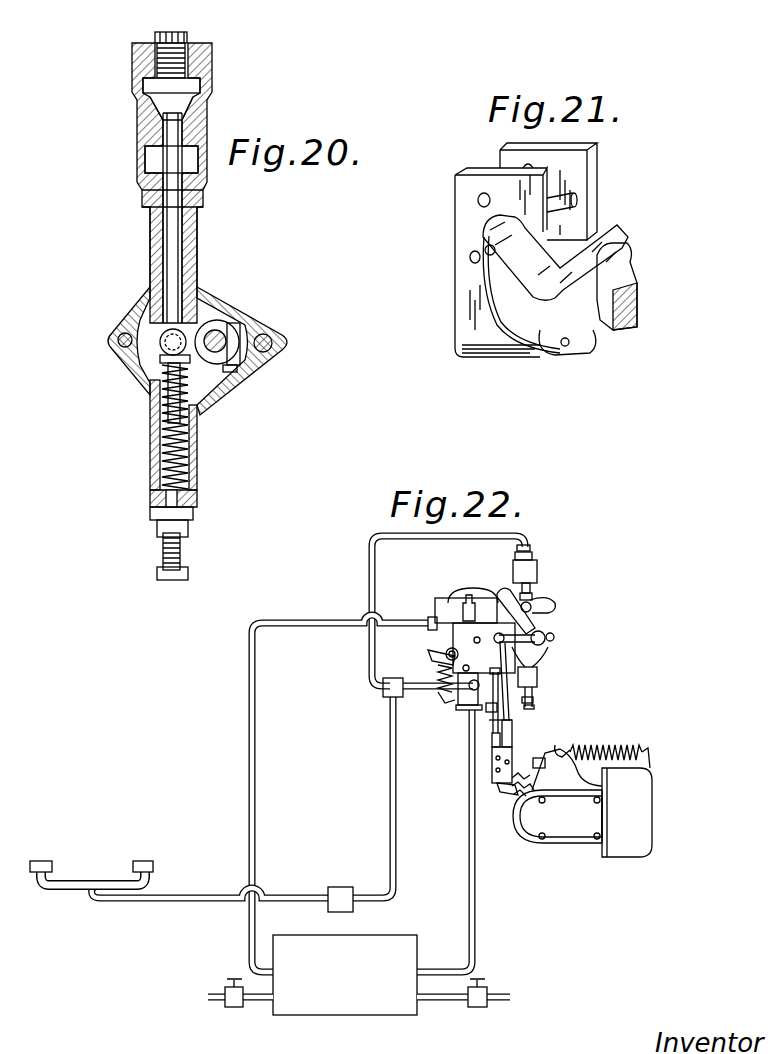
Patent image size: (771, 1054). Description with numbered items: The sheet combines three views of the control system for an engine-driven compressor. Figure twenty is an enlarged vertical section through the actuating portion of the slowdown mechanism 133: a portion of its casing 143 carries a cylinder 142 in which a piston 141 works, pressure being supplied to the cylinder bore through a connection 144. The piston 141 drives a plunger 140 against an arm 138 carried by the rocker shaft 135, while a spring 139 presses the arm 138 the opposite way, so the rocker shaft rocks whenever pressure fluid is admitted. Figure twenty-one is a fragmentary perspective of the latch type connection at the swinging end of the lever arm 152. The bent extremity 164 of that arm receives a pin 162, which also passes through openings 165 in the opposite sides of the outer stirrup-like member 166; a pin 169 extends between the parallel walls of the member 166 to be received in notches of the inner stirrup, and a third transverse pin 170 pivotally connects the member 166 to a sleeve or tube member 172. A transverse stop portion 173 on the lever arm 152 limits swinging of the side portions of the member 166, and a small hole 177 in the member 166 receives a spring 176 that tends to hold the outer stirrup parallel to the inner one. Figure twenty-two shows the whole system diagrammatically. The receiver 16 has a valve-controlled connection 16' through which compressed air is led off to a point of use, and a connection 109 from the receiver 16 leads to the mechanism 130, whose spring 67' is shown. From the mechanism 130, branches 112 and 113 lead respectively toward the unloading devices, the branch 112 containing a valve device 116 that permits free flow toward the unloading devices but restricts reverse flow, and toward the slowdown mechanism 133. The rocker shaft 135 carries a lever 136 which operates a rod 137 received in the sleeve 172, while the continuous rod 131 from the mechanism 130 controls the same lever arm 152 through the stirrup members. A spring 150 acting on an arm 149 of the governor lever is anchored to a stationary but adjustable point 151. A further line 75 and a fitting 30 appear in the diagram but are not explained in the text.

In FIG. 20, the connection 144 is at (170, 35).
In FIG. 22, the connection 144 is at (527, 547).
In FIG. 20, the piston 141 is at (142, 135).
In FIG. 20, the cylinder 142 is at (142, 165).
In FIG. 22, the cylinder 142 is at (537, 580).
In FIG. 20, the plunger 140 is at (172, 252).
In FIG. 20, the casing 143 is at (197, 233).
In FIG. 22, the casing 143 is at (528, 606).
In FIG. 20, the slowdown mechanism 133 is at (262, 318).
In FIG. 22, the slowdown mechanism 133 is at (455, 641).
In FIG. 20, the rocker shaft 135 is at (214, 332).
In FIG. 22, the rocker shaft 135 is at (553, 635).
In FIG. 20, the arm 138 is at (188, 357).
In FIG. 20, the spring 139 is at (165, 430).
In FIG. 21, the pin 169 is at (533, 167).
In FIG. 21, the third transverse pin 170 is at (573, 203).
In FIG. 21, the transverse stop portion 173 is at (618, 232).
In FIG. 22, the transverse stop portion 173 is at (512, 753).
In FIG. 21, the openings 165 is at (470, 257).
In FIG. 21, the pin 162 is at (488, 262).
In FIG. 21, the outer stirrup-like member 166 is at (457, 320).
In FIG. 22, the outer stirrup-like member 166 is at (497, 780).
In FIG. 21, the bent extremity 164 is at (520, 307).
In FIG. 21, the lever arm 152 is at (593, 310).
In FIG. 22, the lever arm 152 is at (500, 790).
In FIG. 21, the small hole 177 is at (570, 343).
In FIG. 22, the branch 113 is at (368, 652).
In FIG. 22, the return line 75 is at (250, 748).
In FIG. 22, the branch 112 is at (392, 827).
In FIG. 22, the valve device 116 is at (337, 893).
In FIG. 22, the manifold fitting 30 is at (105, 880).
In FIG. 22, the connection 109 is at (475, 908).
In FIG. 22, the receiver 16 is at (345, 991).
In FIG. 22, the valve-controlled connection 16' is at (463, 1006).
In FIG. 22, the mechanism 130 is at (456, 640).
In FIG. 22, the spring 67' is at (428, 675).
In FIG. 22, the lever 136 is at (540, 647).
In FIG. 22, the sleeve or tube member 172 is at (512, 732).
In FIG. 22, the rod 137 is at (507, 720).
In FIG. 22, the continuous rod 131 is at (490, 708).
In FIG. 22, the spring 176 is at (518, 792).
In FIG. 22, the arm 149 is at (558, 745).
In FIG. 22, the spring 150 is at (607, 743).
In FIG. 22, the stationary point 151 is at (647, 750).